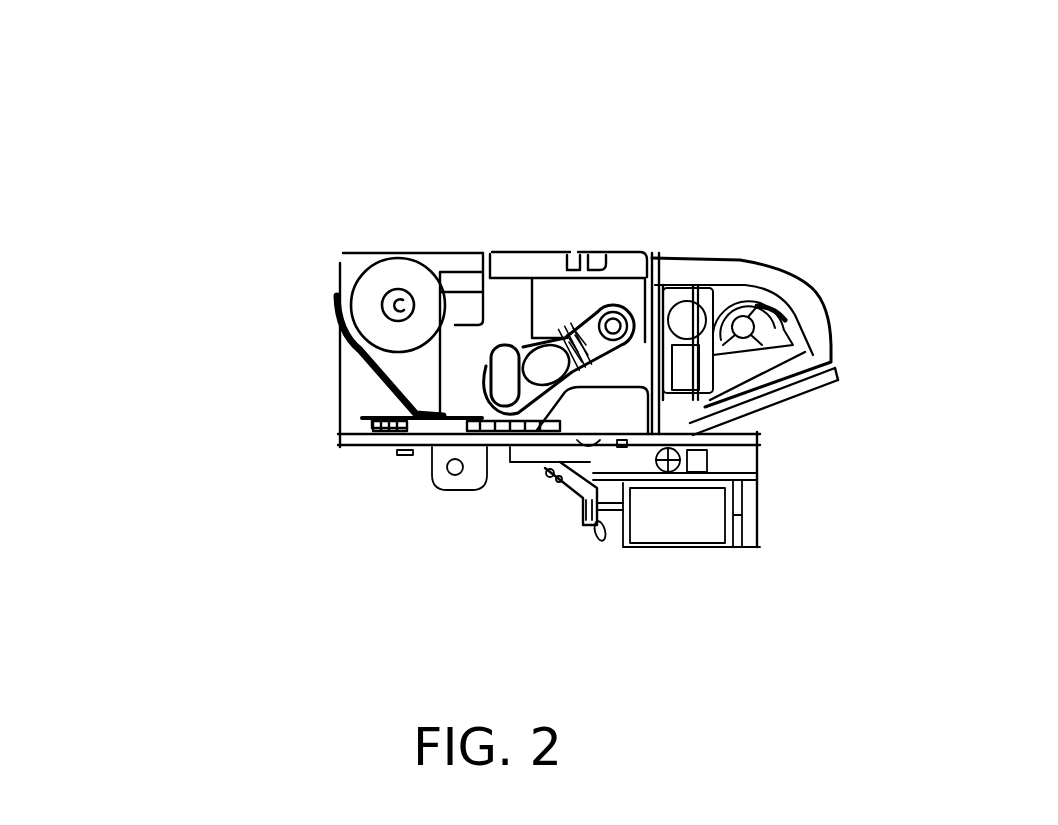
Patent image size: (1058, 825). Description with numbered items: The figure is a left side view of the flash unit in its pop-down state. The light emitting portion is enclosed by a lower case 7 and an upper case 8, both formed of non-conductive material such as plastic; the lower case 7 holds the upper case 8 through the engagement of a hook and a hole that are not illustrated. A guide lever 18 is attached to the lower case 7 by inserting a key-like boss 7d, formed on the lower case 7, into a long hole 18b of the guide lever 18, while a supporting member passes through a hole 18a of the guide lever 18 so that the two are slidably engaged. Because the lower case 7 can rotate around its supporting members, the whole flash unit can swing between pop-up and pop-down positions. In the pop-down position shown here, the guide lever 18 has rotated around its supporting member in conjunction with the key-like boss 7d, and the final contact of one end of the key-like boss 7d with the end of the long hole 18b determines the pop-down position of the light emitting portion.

The lower case 7 is at (697, 393).
The key-like boss 7d is at (503, 372).
The upper case 8 is at (683, 275).
The guide lever 18 is at (565, 340).
The hole 18a is at (611, 311).
The long hole 18b is at (520, 354).